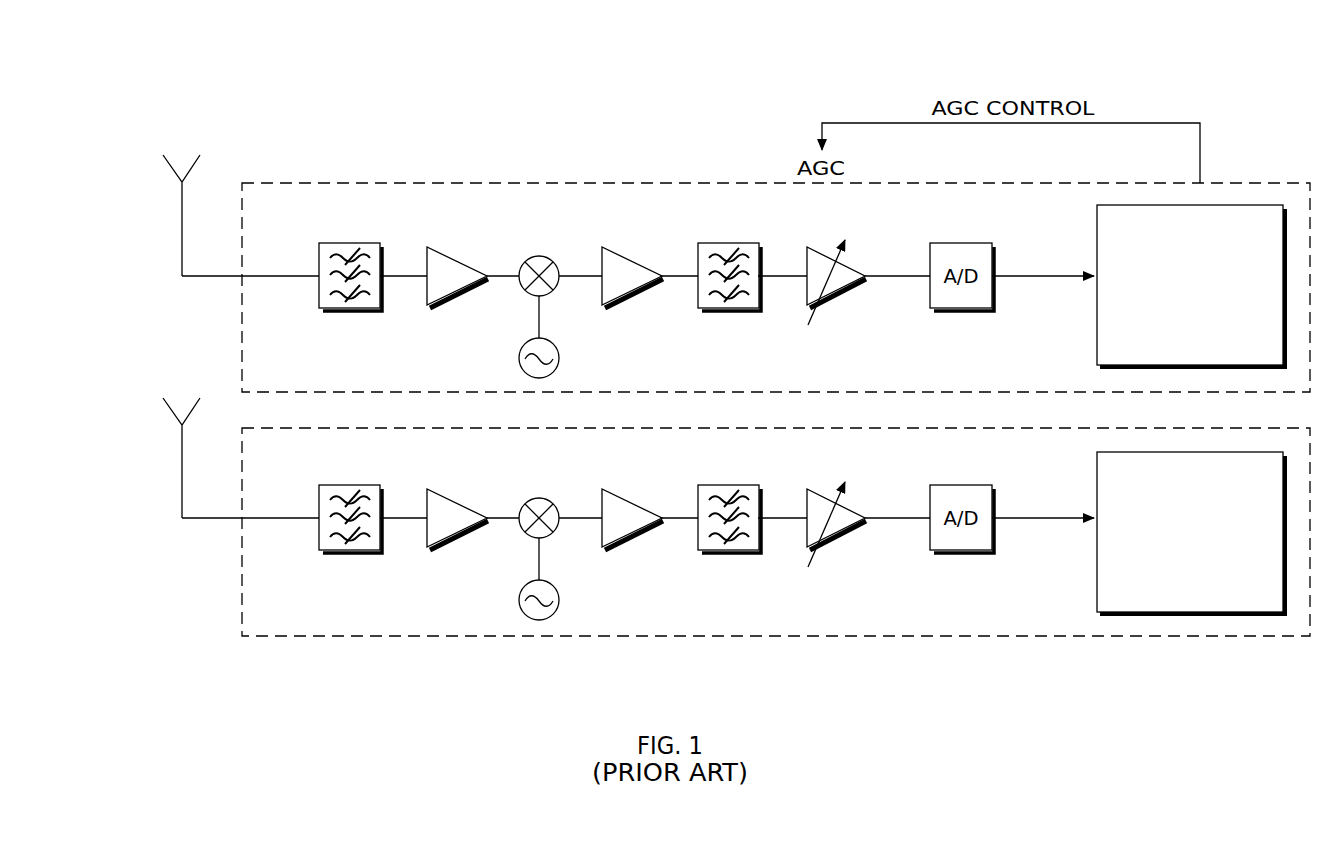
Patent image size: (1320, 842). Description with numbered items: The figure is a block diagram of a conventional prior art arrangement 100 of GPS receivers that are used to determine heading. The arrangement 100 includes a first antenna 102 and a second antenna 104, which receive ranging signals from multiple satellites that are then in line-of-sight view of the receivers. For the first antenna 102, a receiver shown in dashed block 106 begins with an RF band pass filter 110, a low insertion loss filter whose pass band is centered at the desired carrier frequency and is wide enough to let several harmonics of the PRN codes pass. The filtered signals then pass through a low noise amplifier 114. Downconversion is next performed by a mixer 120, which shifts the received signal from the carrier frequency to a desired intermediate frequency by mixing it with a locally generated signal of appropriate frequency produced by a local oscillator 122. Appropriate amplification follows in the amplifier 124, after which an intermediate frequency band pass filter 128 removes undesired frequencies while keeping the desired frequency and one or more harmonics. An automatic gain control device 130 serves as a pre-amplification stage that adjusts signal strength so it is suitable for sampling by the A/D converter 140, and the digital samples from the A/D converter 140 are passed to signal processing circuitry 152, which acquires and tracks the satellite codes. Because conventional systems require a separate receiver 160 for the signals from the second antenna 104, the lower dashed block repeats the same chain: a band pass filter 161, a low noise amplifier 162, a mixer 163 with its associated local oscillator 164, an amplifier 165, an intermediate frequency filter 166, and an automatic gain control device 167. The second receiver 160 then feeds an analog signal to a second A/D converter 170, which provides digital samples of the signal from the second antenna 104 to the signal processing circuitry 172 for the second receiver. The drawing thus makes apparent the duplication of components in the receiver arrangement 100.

The conventional arrangement 100 is at (1271, 88).
The first antenna 102 is at (157, 172).
The second antenna 104 is at (157, 415).
The receiver 106 is at (259, 379).
The RF band pass filter 110 is at (342, 243).
The low noise amplifier 114 is at (443, 250).
The mixer 120 is at (540, 256).
The local oscillator 122 is at (518, 360).
The amplifier 124 is at (620, 305).
The intermediate frequency band pass filter 128 is at (728, 243).
The automatic gain control device 130 is at (832, 302).
The A/D converter 140 is at (962, 243).
The signal processing circuitry 152 is at (1171, 299).
The separate receiver 160 is at (262, 621).
The band pass filter 161 is at (342, 485).
The low noise amplifier 162 is at (443, 492).
The mixer 163 is at (540, 498).
The local oscillator 164 is at (518, 602).
The amplifier 165 is at (620, 547).
The intermediate frequency filter 166 is at (728, 485).
The automatic gain control device 167 is at (832, 544).
The A/D converter 170 is at (962, 485).
The signal processing circuitry 172 is at (1171, 544).